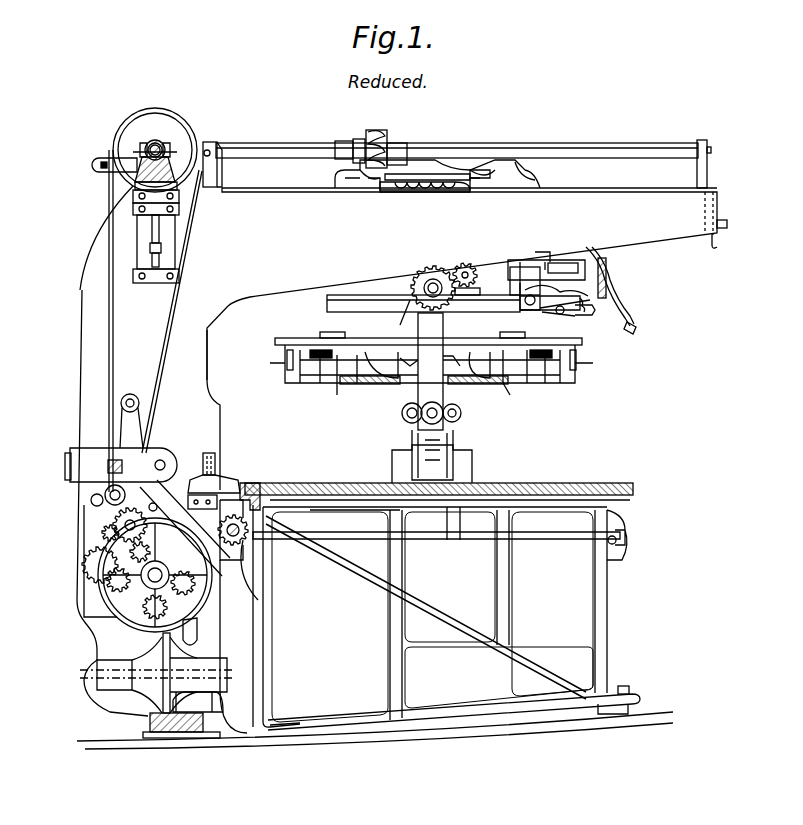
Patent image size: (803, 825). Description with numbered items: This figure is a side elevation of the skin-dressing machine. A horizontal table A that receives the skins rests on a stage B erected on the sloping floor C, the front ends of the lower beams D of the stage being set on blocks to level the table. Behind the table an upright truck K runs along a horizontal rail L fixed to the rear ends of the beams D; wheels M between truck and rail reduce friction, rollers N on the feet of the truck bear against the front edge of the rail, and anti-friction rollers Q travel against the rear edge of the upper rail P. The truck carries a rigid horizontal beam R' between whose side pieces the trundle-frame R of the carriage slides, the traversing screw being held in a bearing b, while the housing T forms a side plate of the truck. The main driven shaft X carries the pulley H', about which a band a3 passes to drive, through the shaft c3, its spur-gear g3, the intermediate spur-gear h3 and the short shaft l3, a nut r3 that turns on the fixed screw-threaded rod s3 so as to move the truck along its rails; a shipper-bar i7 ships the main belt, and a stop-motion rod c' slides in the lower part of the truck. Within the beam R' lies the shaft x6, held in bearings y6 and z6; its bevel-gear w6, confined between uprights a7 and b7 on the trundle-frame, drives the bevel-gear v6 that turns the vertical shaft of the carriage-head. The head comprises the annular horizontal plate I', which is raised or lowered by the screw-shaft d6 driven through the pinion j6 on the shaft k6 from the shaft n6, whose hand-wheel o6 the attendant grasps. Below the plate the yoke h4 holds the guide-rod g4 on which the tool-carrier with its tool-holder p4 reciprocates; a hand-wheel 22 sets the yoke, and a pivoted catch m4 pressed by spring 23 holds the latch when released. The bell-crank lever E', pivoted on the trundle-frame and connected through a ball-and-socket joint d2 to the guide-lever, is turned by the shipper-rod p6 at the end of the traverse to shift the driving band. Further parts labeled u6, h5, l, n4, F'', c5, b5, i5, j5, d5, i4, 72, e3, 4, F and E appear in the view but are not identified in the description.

The pulley H' is at (162, 147).
The main driven shaft X is at (155, 138).
The shipper-bar i7 is at (103, 158).
The band a3 is at (137, 336).
The bearing z6 is at (209, 164).
The shaft x6 is at (457, 151).
The bearing y6 is at (710, 164).
The trundle-frame R is at (469, 176).
The horizontal beam R' is at (467, 339).
The bearing b is at (716, 242).
The housing T is at (189, 373).
The upright b7 is at (355, 160).
The bevel-gear w6 is at (383, 142).
The upright a7 is at (397, 154).
The rack u6 is at (425, 172).
The bevel-gear v6 is at (402, 182).
The spur-gear g3 is at (480, 167).
The annular horizontal plate I' is at (423, 301).
The screw-shaft d6 is at (433, 270).
The horizontal shaft k6 is at (465, 263).
The pinion j6 is at (467, 292).
The hub h5 is at (485, 384).
The shipper-rod p6 is at (400, 318).
The horizontal shaft n6 is at (525, 264).
The bell-crank lever E' is at (546, 252).
The ball-and-socket joint d2 is at (565, 261).
The yoke h4 is at (503, 355).
The pivot l is at (530, 311).
The lever n4 is at (565, 317).
The pivoted catch m4 is at (586, 319).
The spring 23 is at (585, 303).
The hand-wheel o6 is at (612, 292).
The flexible tube F'' is at (611, 290).
The hand-wheel 22 is at (578, 342).
The cam c5 is at (406, 365).
The cam b5 is at (453, 353).
The pin i5 is at (434, 397).
The pin j5 is at (495, 408).
The bar d5 is at (470, 383).
The guide-rod g4 is at (410, 416).
The yoke i4 is at (453, 436).
The tool-holder p4 is at (432, 464).
The horizontal table A is at (439, 482).
The anti-friction rollers Q is at (220, 478).
The upper rail P is at (244, 482).
The nut r3 is at (240, 540).
The screw-threaded rod s3 is at (248, 535).
The upright truck K is at (80, 493).
The pulley 72 is at (118, 495).
The stop-motion rod c' is at (185, 528).
The short horizontal shaft l3 is at (115, 525).
The intermediate spur-gear h3 is at (90, 559).
The horizontal shaft c3 is at (140, 576).
The gear e3 is at (146, 607).
The frame 4 is at (130, 615).
The wheels M is at (157, 667).
The rollers N is at (198, 702).
The horizontal rail L is at (181, 685).
The floor C is at (375, 735).
The stage B is at (440, 617).
The lower beams D is at (454, 712).
The block F is at (629, 686).
The foot E is at (613, 726).